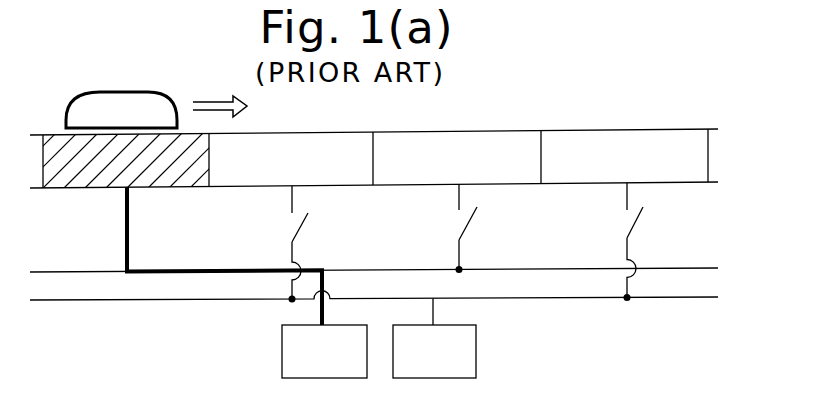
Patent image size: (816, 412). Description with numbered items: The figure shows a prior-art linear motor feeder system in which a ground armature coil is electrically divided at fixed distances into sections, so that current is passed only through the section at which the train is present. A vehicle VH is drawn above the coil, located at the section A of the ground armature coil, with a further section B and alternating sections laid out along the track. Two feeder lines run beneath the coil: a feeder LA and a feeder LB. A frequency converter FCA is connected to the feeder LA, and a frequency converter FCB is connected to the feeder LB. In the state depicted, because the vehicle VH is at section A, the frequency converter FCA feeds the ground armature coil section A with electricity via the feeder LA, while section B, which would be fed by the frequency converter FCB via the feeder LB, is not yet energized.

The vehicle VH is at (121, 110).
The section A of the ground armature coil A is at (238, 158).
The section B of the ground armature coil B is at (457, 157).
The feeder LA is at (374, 257).
The feeder LB is at (374, 285).
The frequency converter FCA is at (324, 351).
The frequency converter FCB is at (434, 338).